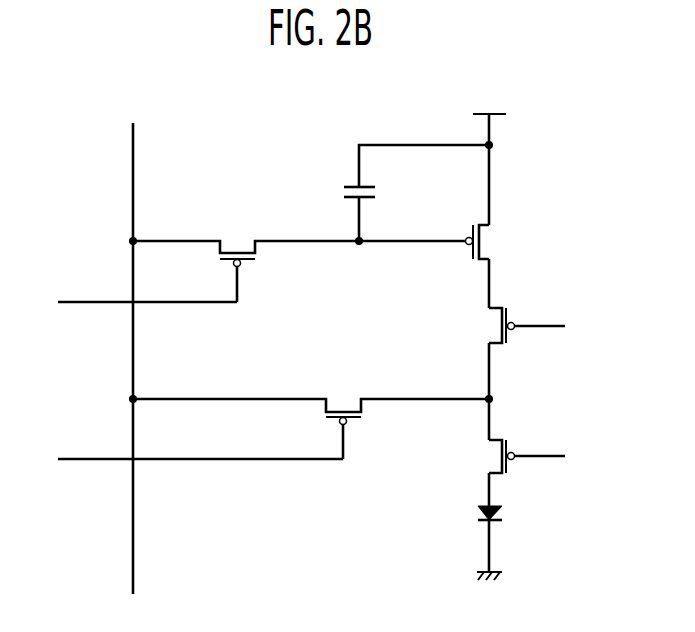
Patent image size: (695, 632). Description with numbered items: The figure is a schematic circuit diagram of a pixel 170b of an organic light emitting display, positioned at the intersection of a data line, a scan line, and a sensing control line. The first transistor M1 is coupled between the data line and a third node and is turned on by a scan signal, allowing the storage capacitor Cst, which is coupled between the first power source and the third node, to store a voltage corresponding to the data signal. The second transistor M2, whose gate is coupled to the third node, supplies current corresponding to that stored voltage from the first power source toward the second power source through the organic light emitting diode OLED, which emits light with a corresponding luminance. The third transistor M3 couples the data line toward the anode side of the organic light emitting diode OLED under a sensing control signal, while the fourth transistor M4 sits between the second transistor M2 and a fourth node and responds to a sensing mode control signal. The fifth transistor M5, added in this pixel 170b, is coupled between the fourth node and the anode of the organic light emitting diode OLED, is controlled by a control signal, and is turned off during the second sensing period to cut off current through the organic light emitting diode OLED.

The pixel 170b is at (637, 69).
The first transistor M1 is at (299, 259).
The second transistor M2 is at (489, 242).
The third transistor M3 is at (311, 417).
The fourth transistor M4 is at (517, 325).
The fifth transistor M5 is at (517, 456).
The storage capacitor Cst is at (401, 193).
The organic light emitting diode OLED is at (511, 514).